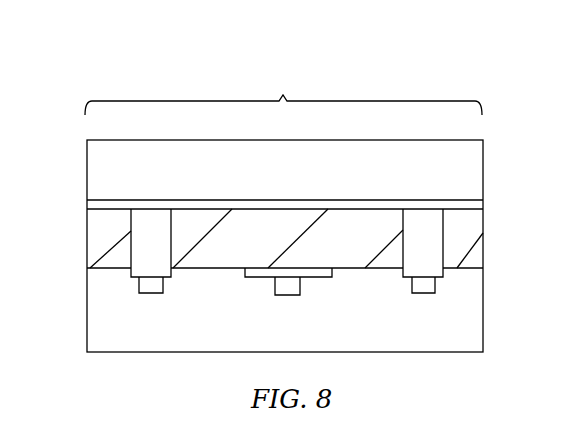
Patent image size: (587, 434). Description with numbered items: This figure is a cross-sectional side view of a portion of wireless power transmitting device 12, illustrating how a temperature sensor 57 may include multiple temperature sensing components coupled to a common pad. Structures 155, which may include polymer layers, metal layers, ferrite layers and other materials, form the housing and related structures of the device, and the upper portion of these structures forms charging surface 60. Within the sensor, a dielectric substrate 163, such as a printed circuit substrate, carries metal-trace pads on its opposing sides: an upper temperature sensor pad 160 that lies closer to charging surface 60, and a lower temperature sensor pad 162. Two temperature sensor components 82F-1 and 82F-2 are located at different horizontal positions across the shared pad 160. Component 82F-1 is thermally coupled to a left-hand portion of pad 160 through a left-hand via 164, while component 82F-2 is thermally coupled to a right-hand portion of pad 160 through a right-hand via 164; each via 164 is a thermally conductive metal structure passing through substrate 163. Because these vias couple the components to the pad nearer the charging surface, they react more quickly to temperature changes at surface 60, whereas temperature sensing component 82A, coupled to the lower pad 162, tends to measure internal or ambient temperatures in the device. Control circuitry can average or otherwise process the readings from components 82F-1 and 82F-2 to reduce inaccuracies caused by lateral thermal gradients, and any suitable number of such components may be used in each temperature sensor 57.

The wireless power transmitting device 12 is at (486, 78).
The temperature sensor 57 is at (283, 95).
The charging surface 60 is at (100, 140).
The structures 155 is at (472, 173).
The temperature sensor pad 160 is at (330, 200).
The dielectric substrate 163 is at (473, 264).
The via 164 is at (137, 224).
The temperature sensor pad 162 is at (255, 279).
The temperature sensing component 82A is at (292, 290).
The temperature sensor component 82F-1 is at (157, 283).
The temperature sensor component 82F-2 is at (425, 286).